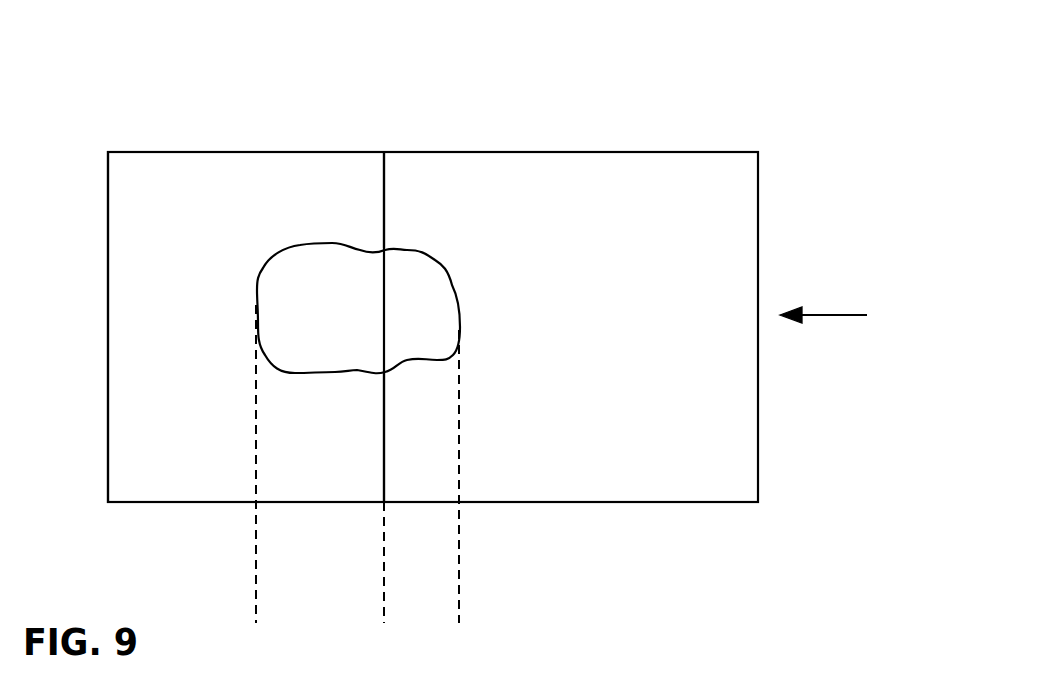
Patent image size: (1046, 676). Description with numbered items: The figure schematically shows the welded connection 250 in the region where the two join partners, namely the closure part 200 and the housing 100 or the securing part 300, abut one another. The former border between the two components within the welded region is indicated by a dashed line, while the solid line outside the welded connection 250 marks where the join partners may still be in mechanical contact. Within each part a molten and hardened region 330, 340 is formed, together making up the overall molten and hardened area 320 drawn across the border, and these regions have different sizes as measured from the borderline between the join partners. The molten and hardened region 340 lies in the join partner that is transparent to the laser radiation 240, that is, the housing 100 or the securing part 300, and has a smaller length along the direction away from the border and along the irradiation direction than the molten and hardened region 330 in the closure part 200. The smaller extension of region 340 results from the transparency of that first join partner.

The housing 100 is at (444, 259).
The securing part 300 is at (665, 173).
The closure part 200 is at (235, 170).
The welded connection 250 is at (385, 282).
The laser radiation 240 is at (815, 305).
The melt pool 320 is at (360, 300).
The molten and hardened region 330 is at (305, 282).
The molten and hardened region 340 is at (410, 347).